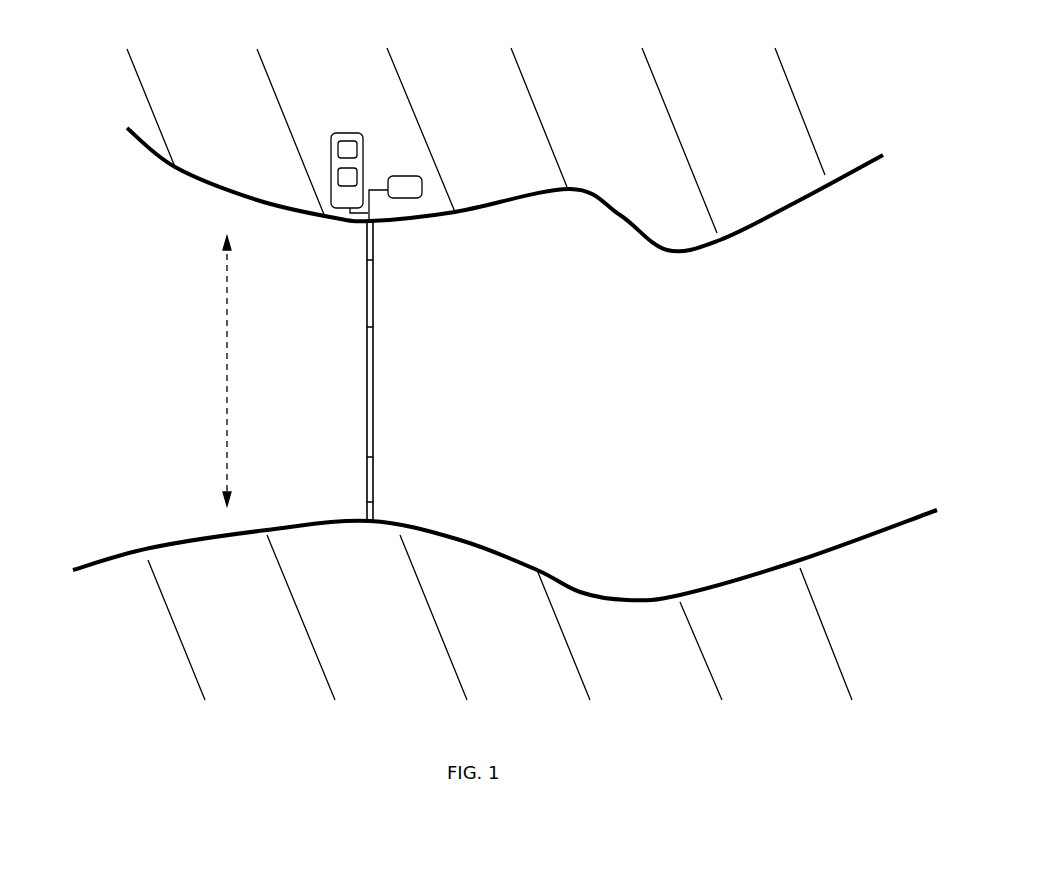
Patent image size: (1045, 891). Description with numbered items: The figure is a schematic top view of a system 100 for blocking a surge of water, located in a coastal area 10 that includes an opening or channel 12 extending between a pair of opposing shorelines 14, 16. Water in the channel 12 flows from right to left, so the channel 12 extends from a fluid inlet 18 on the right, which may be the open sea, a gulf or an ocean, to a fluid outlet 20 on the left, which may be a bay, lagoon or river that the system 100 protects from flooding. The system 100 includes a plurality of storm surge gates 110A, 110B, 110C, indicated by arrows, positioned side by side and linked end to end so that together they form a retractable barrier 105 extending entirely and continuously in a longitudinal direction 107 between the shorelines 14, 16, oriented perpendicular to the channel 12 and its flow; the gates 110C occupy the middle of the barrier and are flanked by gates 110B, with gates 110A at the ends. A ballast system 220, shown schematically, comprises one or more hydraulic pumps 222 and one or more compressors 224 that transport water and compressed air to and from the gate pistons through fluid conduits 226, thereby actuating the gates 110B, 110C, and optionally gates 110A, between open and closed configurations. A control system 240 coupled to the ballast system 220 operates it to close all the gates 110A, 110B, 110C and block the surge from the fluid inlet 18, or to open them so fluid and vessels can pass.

The coastal area 10 is at (87, 127).
The channel 12 is at (668, 398).
The shoreline 14 is at (652, 597).
The shoreline 16 is at (615, 227).
The fluid inlet 18 is at (912, 335).
The fluid outlet 20 is at (110, 320).
The system 100 is at (386, 93).
The retractable barrier 105 is at (354, 315).
The longitudinal direction 107 is at (225, 317).
The surge gate 110A is at (383, 237).
The surge gate 110B is at (383, 292).
The surge gate 110C is at (383, 383).
The ballast system 220 is at (298, 166).
The hydraulic pump 222 is at (343, 145).
The compressor 224 is at (348, 178).
The fluid conduit 226 is at (345, 216).
The control system 240 is at (407, 187).